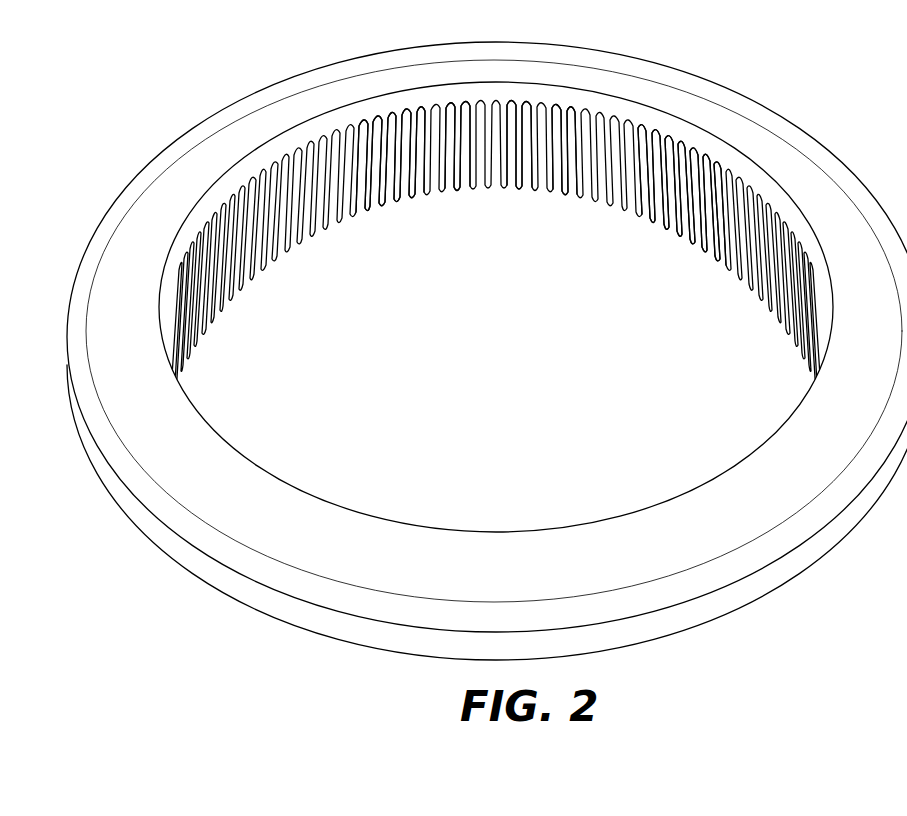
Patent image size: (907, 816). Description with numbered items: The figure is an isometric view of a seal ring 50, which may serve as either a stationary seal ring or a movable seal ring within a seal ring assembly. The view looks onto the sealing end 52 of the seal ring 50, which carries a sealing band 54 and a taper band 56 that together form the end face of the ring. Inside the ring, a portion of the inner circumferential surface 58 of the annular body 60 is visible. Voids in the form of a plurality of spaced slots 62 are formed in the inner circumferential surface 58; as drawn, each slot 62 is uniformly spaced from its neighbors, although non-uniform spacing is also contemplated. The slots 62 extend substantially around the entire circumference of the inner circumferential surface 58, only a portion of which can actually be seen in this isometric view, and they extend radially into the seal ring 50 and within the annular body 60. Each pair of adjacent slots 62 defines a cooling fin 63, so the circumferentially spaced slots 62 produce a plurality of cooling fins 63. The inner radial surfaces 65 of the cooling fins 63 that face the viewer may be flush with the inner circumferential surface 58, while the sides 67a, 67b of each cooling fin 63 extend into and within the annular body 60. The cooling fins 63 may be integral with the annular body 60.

The seal ring 50 is at (487, 386).
The sealing end 52 is at (473, 517).
The sealing band 54 is at (310, 590).
The taper band 56 is at (327, 533).
The inner circumferential surface 58 is at (488, 222).
The annular body 60 is at (833, 130).
The slots 62 is at (722, 256).
The cooling fin 63 is at (420, 200).
The inner radial surface 65 is at (518, 186).
The side of cooling fin 67a is at (453, 190).
The side of cooling fin 67b is at (563, 193).